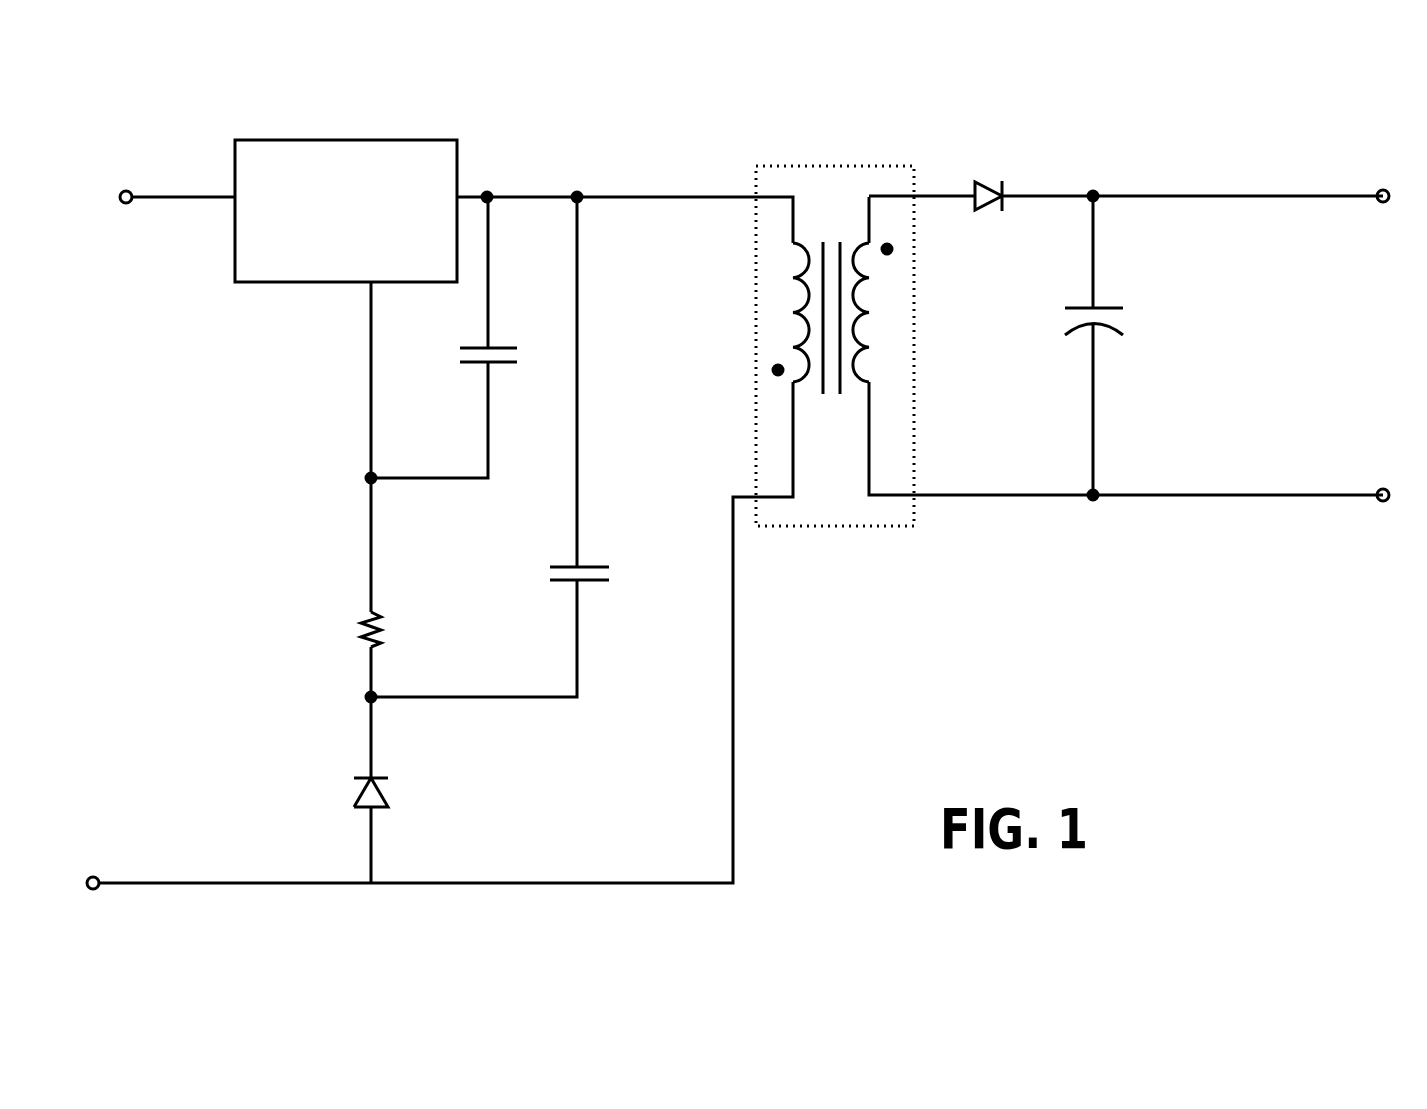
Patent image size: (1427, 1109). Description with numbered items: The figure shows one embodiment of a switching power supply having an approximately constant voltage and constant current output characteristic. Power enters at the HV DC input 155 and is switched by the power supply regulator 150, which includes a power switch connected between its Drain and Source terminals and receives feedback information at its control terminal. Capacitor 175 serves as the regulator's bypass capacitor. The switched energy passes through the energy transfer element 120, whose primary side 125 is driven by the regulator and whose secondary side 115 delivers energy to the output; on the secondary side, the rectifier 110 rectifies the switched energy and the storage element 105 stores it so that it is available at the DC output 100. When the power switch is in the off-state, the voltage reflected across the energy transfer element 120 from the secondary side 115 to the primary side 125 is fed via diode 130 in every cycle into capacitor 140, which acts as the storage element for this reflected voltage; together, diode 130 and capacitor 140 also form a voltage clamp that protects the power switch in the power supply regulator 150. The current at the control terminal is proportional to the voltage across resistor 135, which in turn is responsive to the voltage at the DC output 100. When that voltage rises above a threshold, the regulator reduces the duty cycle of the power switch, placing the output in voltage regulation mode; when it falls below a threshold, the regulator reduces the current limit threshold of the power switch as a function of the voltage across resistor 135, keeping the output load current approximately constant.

The DC output 100 is at (1348, 212).
The storage element 105 is at (1060, 322).
The rectifier 110 is at (990, 172).
The secondary side 115 is at (890, 332).
The energy transfer element 120 is at (836, 380).
The primary side 125 is at (779, 313).
The diode 130 is at (392, 790).
The resistor 135 is at (392, 622).
The capacitor 140 is at (600, 554).
The power supply regulator 150 is at (459, 172).
The HV DC input 155 is at (166, 540).
The capacitor 175 is at (447, 362).